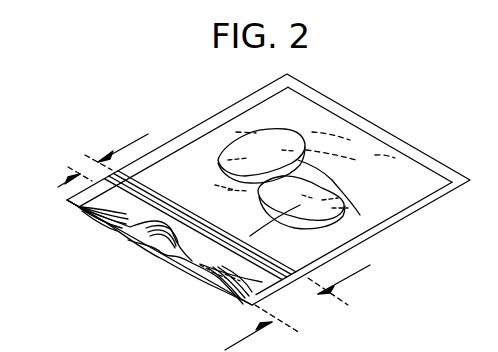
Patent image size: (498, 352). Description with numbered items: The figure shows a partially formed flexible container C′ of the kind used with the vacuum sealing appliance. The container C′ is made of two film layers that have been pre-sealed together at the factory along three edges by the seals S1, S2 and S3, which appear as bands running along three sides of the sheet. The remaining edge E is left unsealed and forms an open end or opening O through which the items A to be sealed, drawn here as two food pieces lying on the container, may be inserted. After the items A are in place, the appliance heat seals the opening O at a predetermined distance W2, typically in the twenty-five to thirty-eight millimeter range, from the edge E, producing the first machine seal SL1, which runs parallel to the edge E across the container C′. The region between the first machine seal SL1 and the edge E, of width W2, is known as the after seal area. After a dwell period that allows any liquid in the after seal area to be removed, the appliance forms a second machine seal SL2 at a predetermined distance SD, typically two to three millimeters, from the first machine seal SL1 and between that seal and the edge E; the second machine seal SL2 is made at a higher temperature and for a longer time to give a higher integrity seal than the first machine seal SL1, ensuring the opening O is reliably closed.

The seal S1 is at (214, 123).
The seal S2 is at (327, 102).
The seal S3 is at (417, 208).
The container C′ is at (380, 160).
The first machine seal SL1 is at (150, 200).
The second machine seal SL2 is at (143, 237).
The top edge E is at (173, 257).
The opening O is at (187, 273).
The items A is at (360, 215).
The predetermined distance SD is at (80, 167).
The predetermined distance W2 is at (297, 307).